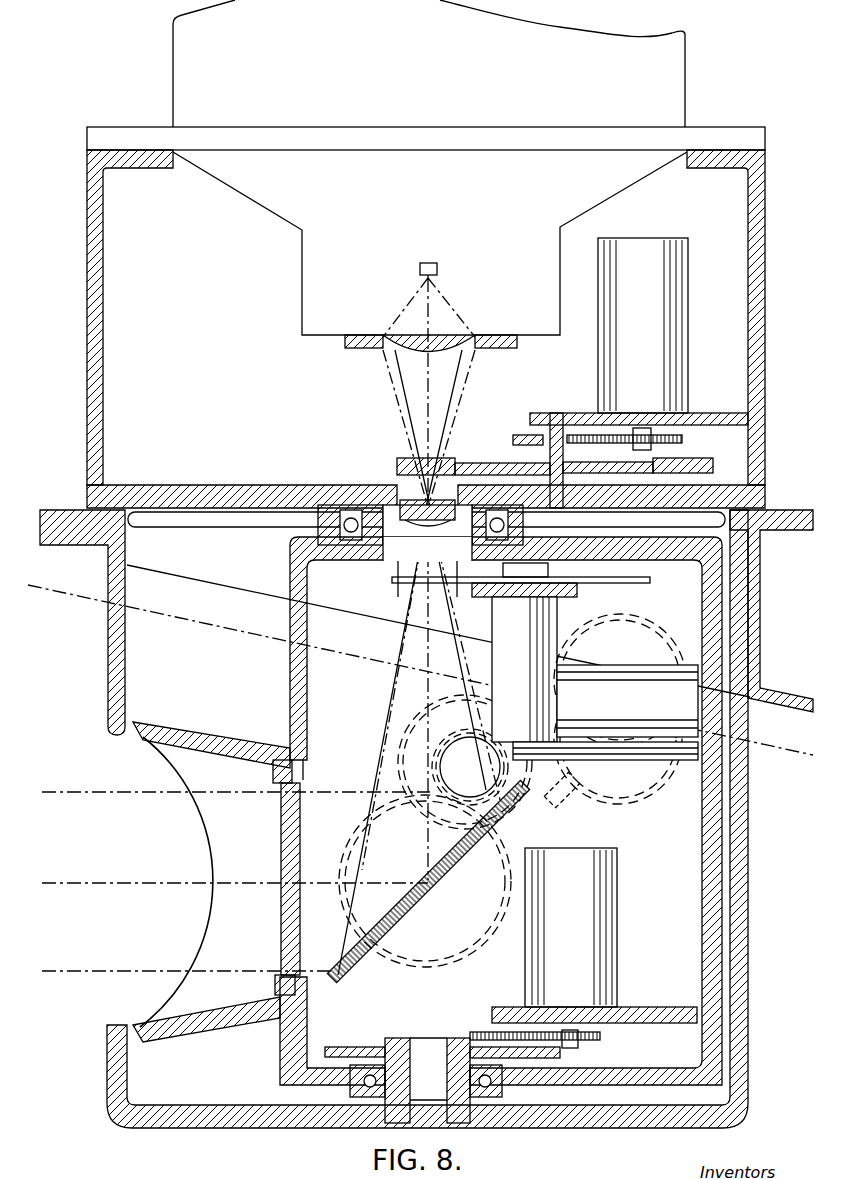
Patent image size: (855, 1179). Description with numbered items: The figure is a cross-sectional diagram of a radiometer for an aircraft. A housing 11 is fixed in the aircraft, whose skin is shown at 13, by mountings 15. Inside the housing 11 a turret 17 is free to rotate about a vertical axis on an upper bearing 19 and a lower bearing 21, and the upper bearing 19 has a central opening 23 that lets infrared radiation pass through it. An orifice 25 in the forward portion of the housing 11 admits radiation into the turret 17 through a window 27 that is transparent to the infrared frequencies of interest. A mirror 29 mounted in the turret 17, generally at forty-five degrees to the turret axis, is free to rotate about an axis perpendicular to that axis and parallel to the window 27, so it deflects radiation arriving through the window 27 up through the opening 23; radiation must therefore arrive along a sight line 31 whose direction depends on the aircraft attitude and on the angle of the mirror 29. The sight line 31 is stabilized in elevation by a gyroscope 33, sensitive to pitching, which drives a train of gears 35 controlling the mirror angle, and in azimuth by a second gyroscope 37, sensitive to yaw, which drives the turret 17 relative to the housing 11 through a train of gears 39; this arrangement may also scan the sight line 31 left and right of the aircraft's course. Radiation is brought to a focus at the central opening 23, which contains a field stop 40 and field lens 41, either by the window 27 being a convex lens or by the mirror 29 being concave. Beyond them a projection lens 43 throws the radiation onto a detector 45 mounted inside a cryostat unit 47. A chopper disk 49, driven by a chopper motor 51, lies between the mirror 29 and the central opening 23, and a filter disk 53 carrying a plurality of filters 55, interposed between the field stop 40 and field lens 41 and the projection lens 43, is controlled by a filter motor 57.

The housing 11 is at (742, 817).
The skin of the aircraft 13 is at (48, 590).
The mountings 15 is at (100, 552).
The turret 17 is at (702, 877).
The upper bearing 19 is at (352, 520).
The lower bearing 21 is at (368, 1078).
The central opening 23 is at (395, 547).
The orifice 25 is at (178, 940).
The window 27 is at (282, 859).
The mirror 29 is at (432, 889).
The sight line 31 is at (193, 878).
The gyroscope 33 is at (641, 708).
The train of gears 35 is at (572, 792).
The second gyroscope 37 is at (580, 938).
The train of gears 39 is at (480, 1033).
The field stop 40 is at (447, 598).
The field lens 41 is at (397, 495).
The projection lens 43 is at (456, 334).
The detector 45 is at (436, 268).
The cryostat unit 47 is at (419, 73).
The chopper disk 49 is at (410, 582).
The chopper motor 51 is at (530, 642).
The filter disk 53 is at (488, 449).
The filters 55 is at (412, 460).
The filter motor 57 is at (654, 335).